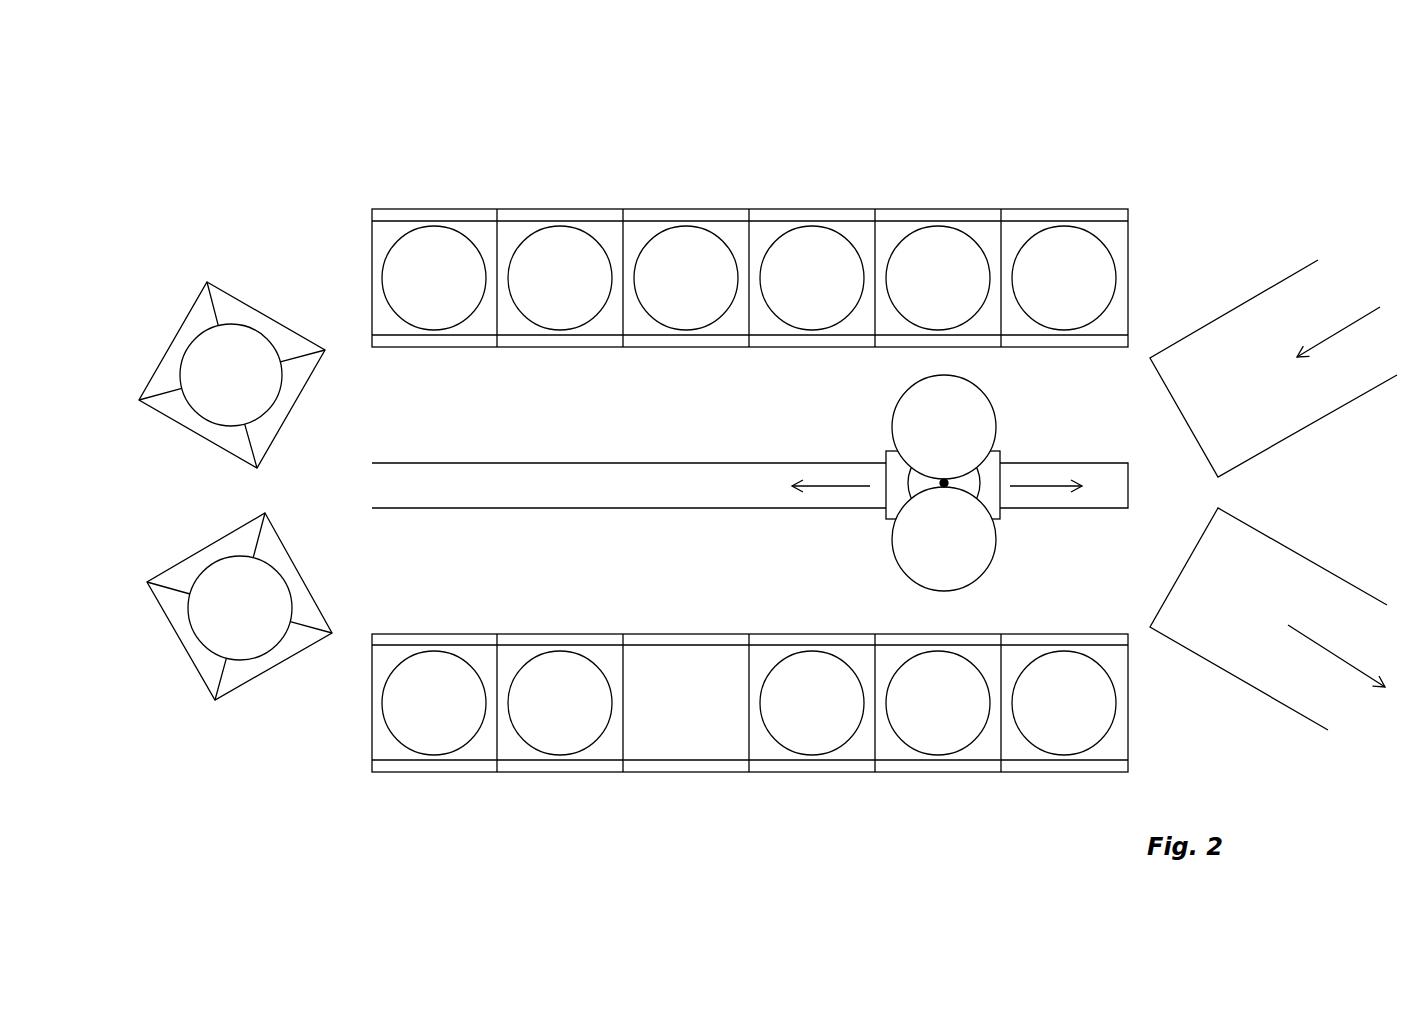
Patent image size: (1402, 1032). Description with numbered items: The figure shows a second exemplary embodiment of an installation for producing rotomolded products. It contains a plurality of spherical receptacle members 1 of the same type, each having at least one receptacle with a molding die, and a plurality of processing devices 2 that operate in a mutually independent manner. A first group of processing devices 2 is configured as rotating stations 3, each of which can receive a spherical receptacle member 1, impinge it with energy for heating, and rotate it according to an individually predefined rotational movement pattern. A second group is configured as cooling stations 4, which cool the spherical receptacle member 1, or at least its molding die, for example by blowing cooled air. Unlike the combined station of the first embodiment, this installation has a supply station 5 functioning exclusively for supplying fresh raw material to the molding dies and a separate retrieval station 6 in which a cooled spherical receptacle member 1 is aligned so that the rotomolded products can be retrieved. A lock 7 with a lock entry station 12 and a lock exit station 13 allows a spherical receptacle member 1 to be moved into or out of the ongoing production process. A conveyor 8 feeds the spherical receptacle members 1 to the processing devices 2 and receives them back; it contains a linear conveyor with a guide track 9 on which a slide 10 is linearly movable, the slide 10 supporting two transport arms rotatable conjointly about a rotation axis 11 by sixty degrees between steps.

The spherical receptacle member 1 is at (1072, 296).
The processing device 2 is at (838, 73).
The rotating station 3 is at (439, 185).
The cooling station 4 is at (438, 788).
The supply station 5 is at (238, 307).
The retrieval station 6 is at (198, 659).
The lock 7 is at (1270, 248).
The conveyor 8 is at (1052, 553).
The guide track 9 is at (523, 493).
The slide 10 is at (891, 511).
The rotation axis 11 is at (944, 483).
The lock entry station 12 is at (1238, 397).
The lock exit station 13 is at (1231, 618).